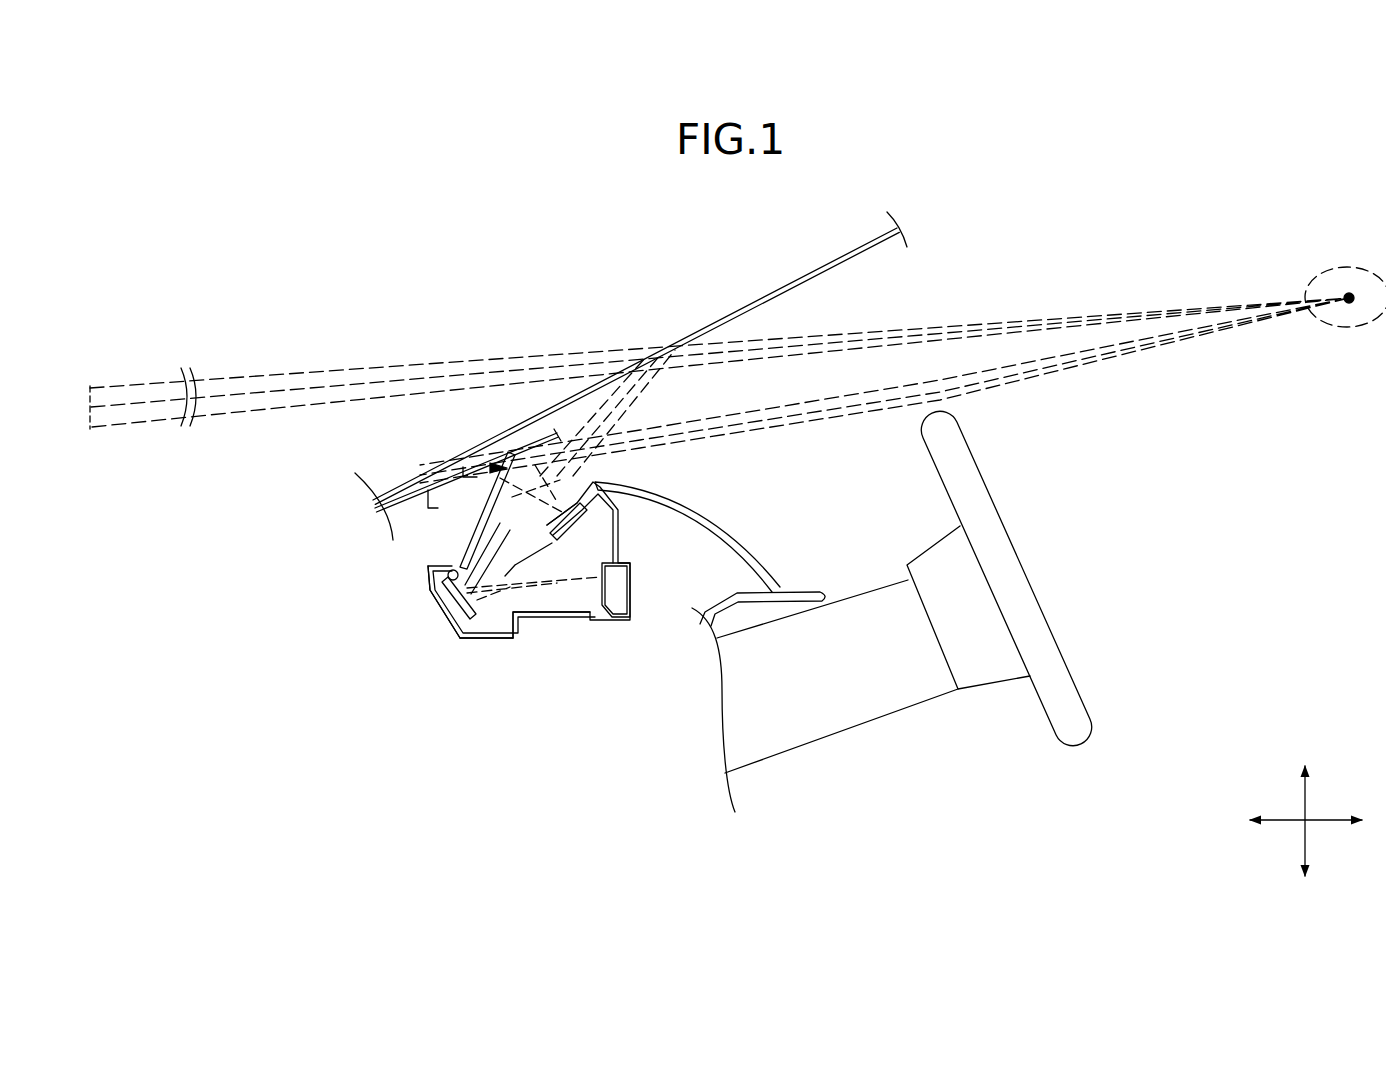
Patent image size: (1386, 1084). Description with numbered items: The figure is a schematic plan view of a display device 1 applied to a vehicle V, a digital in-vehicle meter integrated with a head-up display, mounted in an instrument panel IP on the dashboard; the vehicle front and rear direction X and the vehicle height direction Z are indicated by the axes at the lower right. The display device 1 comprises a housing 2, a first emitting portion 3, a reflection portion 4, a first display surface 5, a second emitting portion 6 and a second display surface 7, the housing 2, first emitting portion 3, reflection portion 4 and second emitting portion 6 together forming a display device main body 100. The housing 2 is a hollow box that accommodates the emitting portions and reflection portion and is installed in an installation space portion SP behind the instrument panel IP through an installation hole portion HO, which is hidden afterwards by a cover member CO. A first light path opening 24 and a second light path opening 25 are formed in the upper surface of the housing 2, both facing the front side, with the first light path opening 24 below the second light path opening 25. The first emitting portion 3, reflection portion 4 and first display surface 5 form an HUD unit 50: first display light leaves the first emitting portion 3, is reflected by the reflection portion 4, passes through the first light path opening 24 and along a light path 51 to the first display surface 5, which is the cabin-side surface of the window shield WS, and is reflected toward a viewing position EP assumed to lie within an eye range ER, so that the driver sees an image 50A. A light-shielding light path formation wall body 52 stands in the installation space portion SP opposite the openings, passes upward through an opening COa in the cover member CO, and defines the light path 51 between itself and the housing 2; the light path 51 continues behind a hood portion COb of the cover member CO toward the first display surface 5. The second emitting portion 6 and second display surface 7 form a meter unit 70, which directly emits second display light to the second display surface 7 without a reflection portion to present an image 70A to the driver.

The display device 1 is at (447, 290).
The housing 2 is at (481, 643).
The first emitting portion 3 is at (600, 620).
The reflection portion 4 is at (513, 640).
The first display surface 5 is at (667, 352).
The second emitting portion 6 is at (485, 520).
The second display surface 7 is at (548, 527).
The first light path opening 24 is at (430, 588).
The second light path opening 25 is at (573, 547).
The HUD unit 50 is at (647, 752).
The image 50A is at (90, 428).
The light path 51 is at (512, 450).
The light path formation wall body 52 is at (449, 572).
The meter unit 70 is at (320, 525).
The image 70A is at (427, 463).
The display device main body 100 is at (428, 618).
The window shield WS is at (662, 328).
The vehicle V is at (716, 254).
The cover member CO is at (677, 492).
The opening COa is at (543, 490).
The hood portion COb is at (553, 438).
The instrument panel IP is at (743, 533).
The installation space portion SP is at (722, 575).
The installation hole portion HO is at (693, 522).
The viewing position EP is at (1349, 296).
The eye range ER is at (1335, 328).
The vehicle height direction Z is at (1307, 797).
The vehicle front and rear direction X is at (1327, 822).